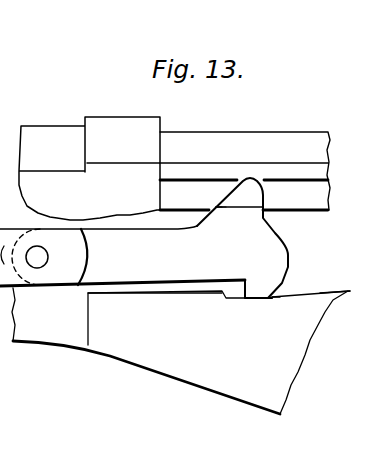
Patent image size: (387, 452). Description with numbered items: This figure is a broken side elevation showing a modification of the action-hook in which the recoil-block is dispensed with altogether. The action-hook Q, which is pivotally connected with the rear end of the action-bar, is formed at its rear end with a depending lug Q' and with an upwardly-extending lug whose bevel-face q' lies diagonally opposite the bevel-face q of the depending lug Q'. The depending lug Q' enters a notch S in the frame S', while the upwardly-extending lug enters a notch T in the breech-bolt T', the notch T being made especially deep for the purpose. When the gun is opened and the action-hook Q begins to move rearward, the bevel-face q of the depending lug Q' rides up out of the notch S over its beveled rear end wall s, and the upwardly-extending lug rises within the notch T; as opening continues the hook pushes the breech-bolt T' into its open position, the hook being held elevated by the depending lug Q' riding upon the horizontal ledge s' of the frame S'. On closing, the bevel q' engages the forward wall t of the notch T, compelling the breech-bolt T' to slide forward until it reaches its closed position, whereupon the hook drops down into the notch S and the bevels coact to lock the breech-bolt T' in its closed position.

The breech-bolt T' is at (245, 171).
The notch in the breech-bolt T is at (230, 202).
The forward wall of the notch T t is at (208, 208).
The action-hook Q is at (144, 254).
The bevel-face of the upwardly-extending lug q' is at (216, 221).
The depending lug Q' is at (266, 287).
The bevel-face of the depending lug q is at (285, 305).
The notch in the frame S is at (181, 351).
The frame S' is at (155, 319).
The beveled rear end wall of notch S s is at (262, 317).
The horizontal ledge of the frame s' is at (335, 283).